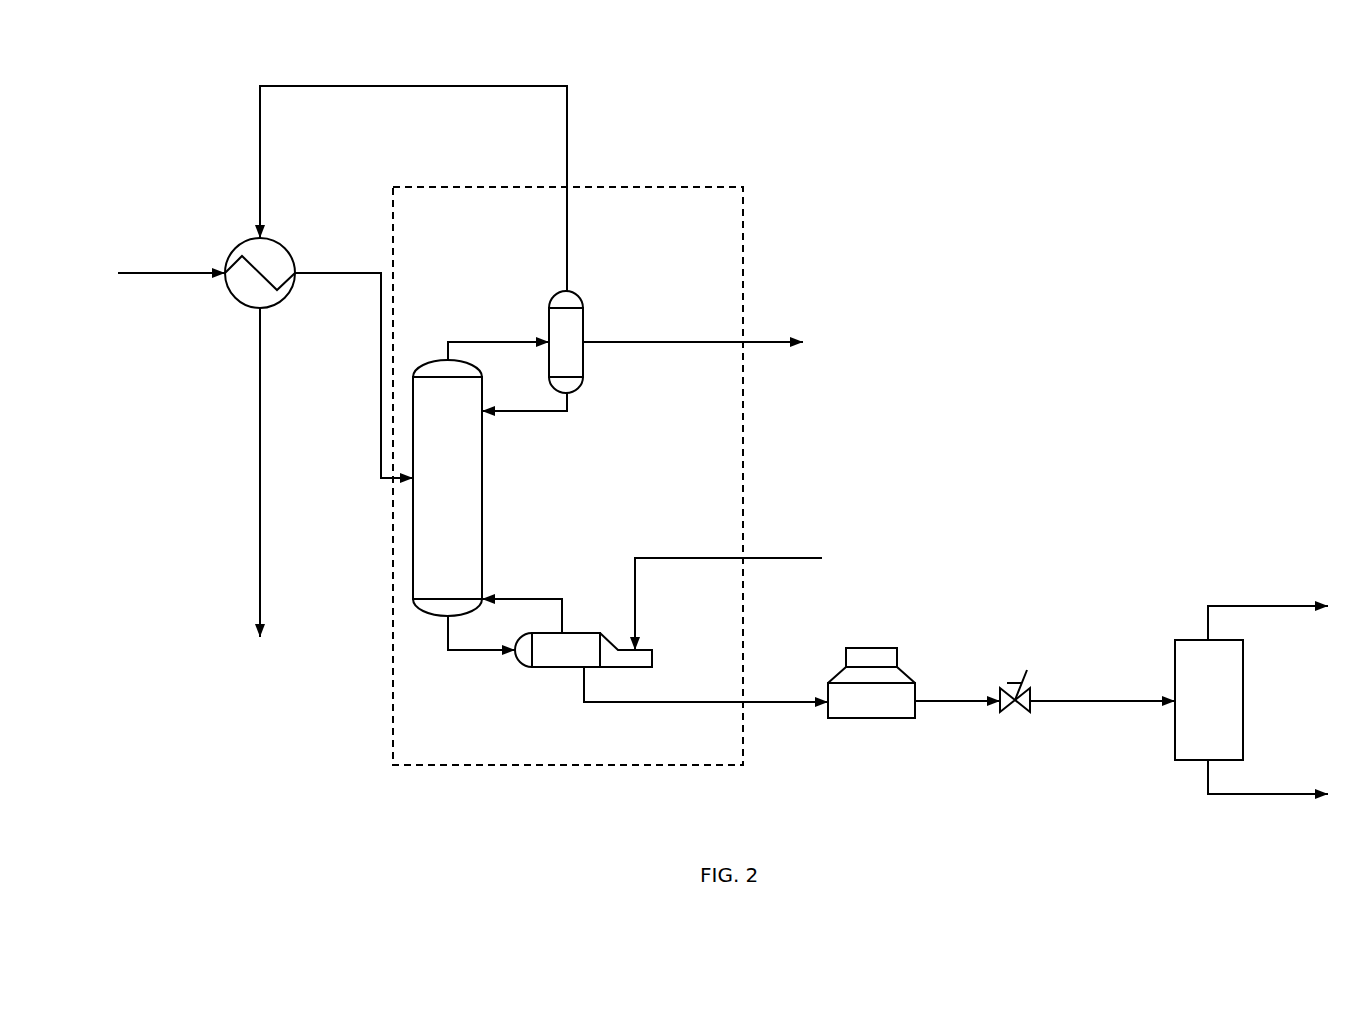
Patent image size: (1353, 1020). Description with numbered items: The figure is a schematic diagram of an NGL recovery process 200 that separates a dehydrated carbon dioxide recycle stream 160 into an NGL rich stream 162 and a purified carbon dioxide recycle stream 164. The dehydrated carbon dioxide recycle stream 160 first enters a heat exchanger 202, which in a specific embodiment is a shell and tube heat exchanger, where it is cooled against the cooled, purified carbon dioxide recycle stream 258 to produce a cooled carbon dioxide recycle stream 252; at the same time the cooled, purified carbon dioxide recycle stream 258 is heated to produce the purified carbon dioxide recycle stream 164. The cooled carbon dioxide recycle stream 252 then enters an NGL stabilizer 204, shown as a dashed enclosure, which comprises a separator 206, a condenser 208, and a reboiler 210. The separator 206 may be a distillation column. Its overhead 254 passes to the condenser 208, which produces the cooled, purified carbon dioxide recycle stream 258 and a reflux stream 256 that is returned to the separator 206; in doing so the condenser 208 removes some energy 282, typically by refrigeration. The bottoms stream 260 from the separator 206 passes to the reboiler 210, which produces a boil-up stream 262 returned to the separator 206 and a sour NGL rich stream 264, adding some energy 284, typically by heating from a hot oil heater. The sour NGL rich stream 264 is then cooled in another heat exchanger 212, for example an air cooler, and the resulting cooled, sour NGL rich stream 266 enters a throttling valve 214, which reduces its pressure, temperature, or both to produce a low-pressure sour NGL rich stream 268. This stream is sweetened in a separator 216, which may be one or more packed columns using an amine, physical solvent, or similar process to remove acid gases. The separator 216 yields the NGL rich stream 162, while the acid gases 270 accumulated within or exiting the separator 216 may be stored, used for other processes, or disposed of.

The NGL recovery process 200 is at (1027, 147).
The NGL stabilizer 204 is at (688, 190).
The heat exchanger 202 is at (277, 243).
The dehydrated carbon dioxide recycle stream 160 is at (171, 262).
The cooled carbon dioxide recycle stream 252 is at (354, 364).
The purified carbon dioxide recycle stream 164 is at (282, 472).
The cooled, purified carbon dioxide recycle stream 258 is at (413, 177).
The separator 206 is at (482, 527).
The condenser 208 is at (580, 295).
The overhead 254 is at (498, 339).
The energy 282 is at (693, 330).
The reflux stream 256 is at (524, 400).
The reboiler 210 is at (575, 633).
The boil-up stream 262 is at (522, 605).
The bottoms stream 260 is at (481, 633).
The energy 284 is at (728, 594).
The sour NGL rich stream 264 is at (706, 684).
The heat exchanger 212 is at (862, 648).
The cooled, sour NGL rich stream 266 is at (957, 689).
The throttling valve 214 is at (1032, 680).
The low-pressure sour NGL rich stream 268 is at (1102, 689).
The separator 216 is at (1244, 676).
The acid gases 270 is at (1268, 608).
The NGL rich stream 162 is at (1268, 777).